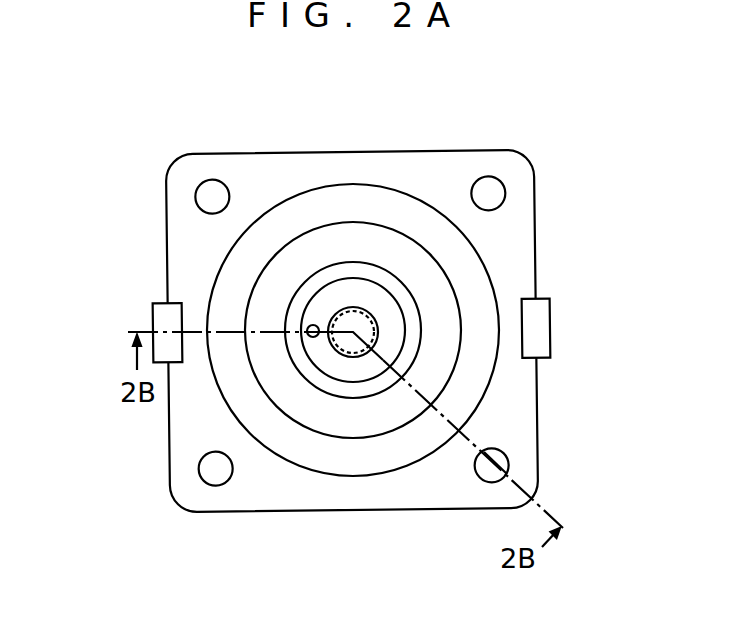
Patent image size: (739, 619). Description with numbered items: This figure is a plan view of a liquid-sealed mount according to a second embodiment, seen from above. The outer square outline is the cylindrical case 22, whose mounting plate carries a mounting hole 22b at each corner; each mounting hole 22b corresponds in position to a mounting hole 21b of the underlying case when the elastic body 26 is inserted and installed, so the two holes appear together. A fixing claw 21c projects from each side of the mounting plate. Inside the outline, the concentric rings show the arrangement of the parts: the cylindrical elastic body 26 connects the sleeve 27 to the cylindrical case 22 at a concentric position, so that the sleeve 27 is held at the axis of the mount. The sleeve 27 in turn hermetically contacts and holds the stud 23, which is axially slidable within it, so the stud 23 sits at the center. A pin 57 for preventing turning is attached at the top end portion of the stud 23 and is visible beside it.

The cylindrical case 22 is at (423, 160).
The mounting hole 21b is at (354, 369).
The mounting hole 22b is at (196, 198).
The fixing claw 21c is at (157, 318).
The elastic body 26 is at (443, 295).
The sleeve 27 is at (348, 268).
The stud 23 is at (358, 370).
The pin 57 is at (313, 338).